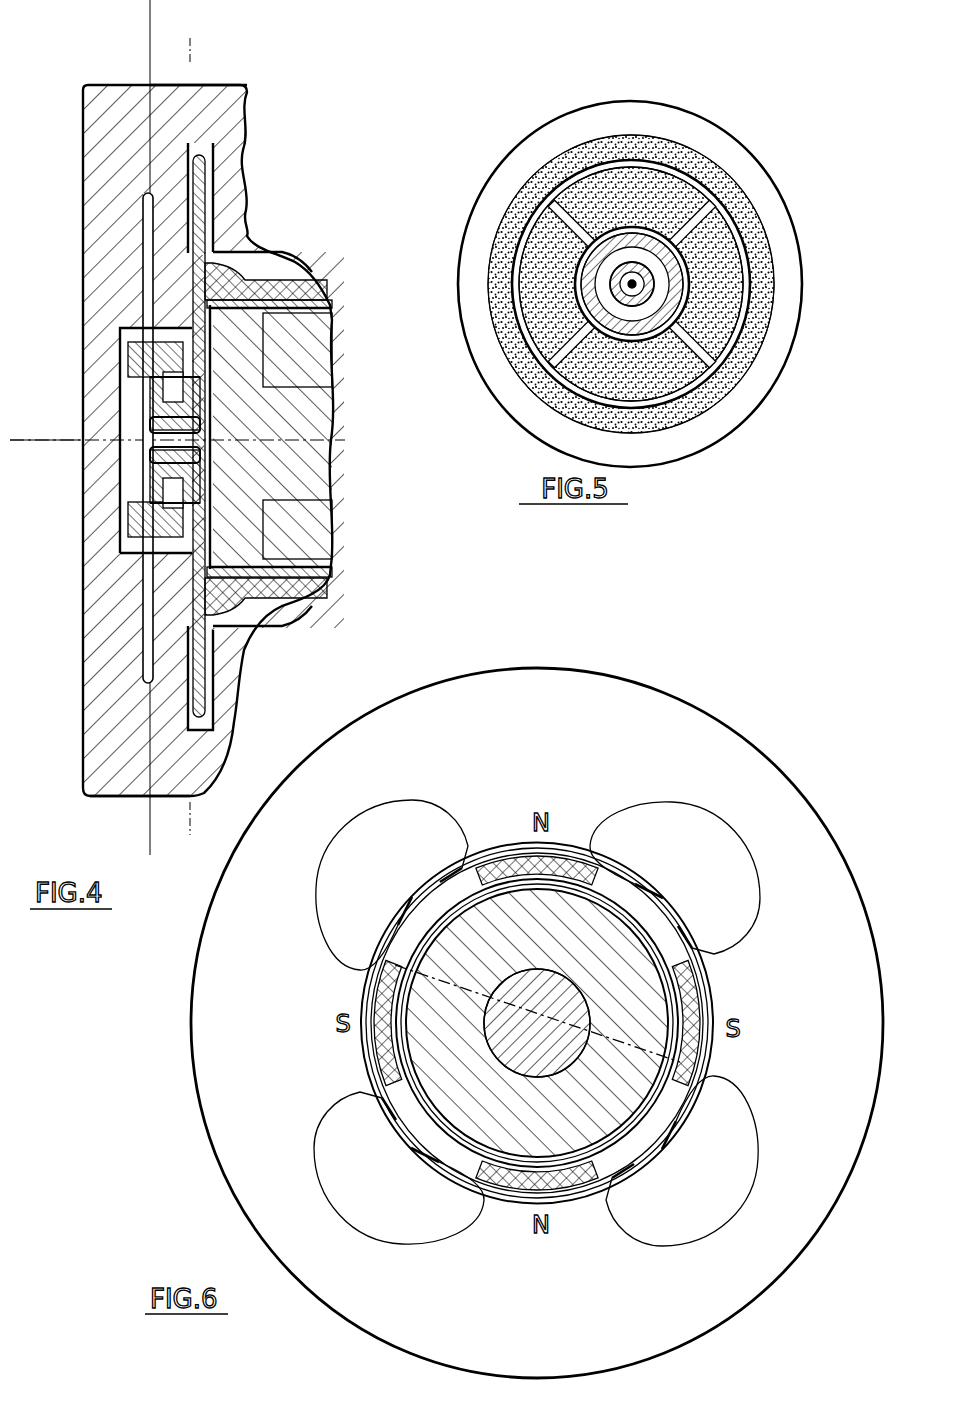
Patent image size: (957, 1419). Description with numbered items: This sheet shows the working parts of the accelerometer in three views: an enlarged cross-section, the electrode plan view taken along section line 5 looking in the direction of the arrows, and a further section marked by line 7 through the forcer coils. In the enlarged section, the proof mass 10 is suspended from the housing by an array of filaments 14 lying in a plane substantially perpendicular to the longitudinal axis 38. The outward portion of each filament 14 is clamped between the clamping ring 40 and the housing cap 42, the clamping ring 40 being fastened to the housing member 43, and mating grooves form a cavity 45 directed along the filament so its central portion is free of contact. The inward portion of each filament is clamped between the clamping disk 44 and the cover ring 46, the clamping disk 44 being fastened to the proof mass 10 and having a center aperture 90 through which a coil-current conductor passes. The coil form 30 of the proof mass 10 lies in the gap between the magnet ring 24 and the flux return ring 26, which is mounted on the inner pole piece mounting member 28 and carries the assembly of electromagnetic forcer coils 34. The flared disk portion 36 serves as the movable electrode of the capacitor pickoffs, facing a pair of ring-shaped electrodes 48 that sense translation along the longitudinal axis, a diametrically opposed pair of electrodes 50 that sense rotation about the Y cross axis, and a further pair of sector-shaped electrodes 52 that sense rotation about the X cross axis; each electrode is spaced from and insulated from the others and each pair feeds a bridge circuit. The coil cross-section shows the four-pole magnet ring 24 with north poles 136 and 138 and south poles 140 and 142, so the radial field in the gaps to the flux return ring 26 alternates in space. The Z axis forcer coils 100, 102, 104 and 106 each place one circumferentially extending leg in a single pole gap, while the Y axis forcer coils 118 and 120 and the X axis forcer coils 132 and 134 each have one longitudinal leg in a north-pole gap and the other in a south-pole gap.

In FIG. 4, the section line 5— 5 is at (170, 48).
In FIG. 4, the section line 7- 7 is at (160, 4).
In FIG. 4, the proof mass 10 is at (332, 302).
In FIG. 4, the filaments 14 is at (143, 212).
In FIG. 6, the magnet ring 24 is at (517, 734).
In FIG. 4, the flux return ring 26 is at (295, 348).
In FIG. 6, the flux return ring 26 is at (517, 934).
In FIG. 4, the inner pole piece mounting member 28 is at (295, 488).
In FIG. 6, the inner pole piece mounting member 28 is at (517, 1015).
In FIG. 4, the coil form 30 is at (325, 577).
In FIG. 6, the coil form 30 is at (467, 893).
In FIG. 4, the electromagnetic forcer coils 34 is at (318, 598).
In FIG. 4, the disk portion 36 is at (223, 662).
In FIG. 4, the longitudinal axis 38 is at (60, 443).
In FIG. 4, the clamping ring 40 is at (172, 722).
In FIG. 5, the clamping ring 40 is at (786, 364).
In FIG. 4, the housing cap 42 is at (103, 203).
In FIG. 4, the housing member 43 is at (246, 88).
In FIG. 4, the clamping disk 44 is at (150, 477).
In FIG. 4, the cavity 45 is at (143, 295).
In FIG. 4, the cover ring 46 is at (133, 517).
In FIG. 4, the ring-shaped electrodes 48 is at (185, 190).
In FIG. 5, the ring-shaped electrodes 48 is at (599, 138).
In FIG. 4, the electrodes 50 is at (206, 227).
In FIG. 5, the electrodes 50 is at (657, 198).
In FIG. 5, the sector-shaped electrodes 52 is at (515, 280).
In FIG. 4, the center aperture 90 is at (158, 446).
In FIG. 6, the Z axis forcer coil 100 is at (680, 925).
In FIG. 6, the Z axis forcer coil 102 is at (442, 885).
In FIG. 6, the Z axis forcer coil 104 is at (405, 1112).
In FIG. 6, the Z axis forcer coil 106 is at (662, 1115).
In FIG. 6, the Y axis forcer coil 118 is at (652, 995).
In FIG. 6, the Y axis forcer coil 120 is at (405, 1050).
In FIG. 6, the X axis forcer coil 132 is at (415, 988).
In FIG. 6, the X axis forcer coil 134 is at (662, 1045).
In FIG. 6, the north pole 136 is at (565, 844).
In FIG. 6, the north pole 138 is at (566, 1204).
In FIG. 6, the south pole 140 is at (365, 982).
In FIG. 6, the south pole 142 is at (718, 975).